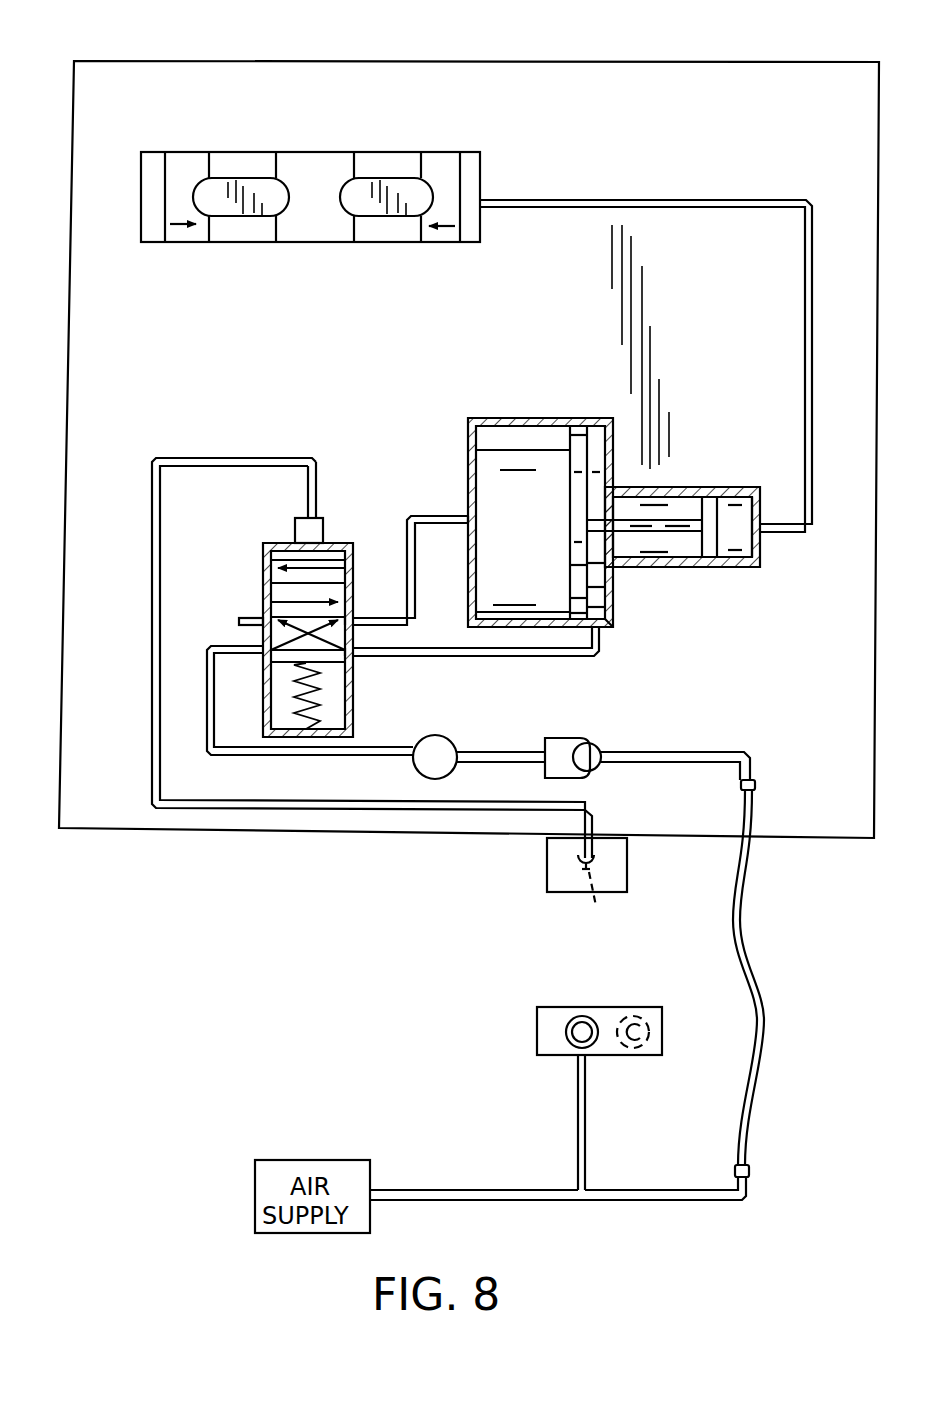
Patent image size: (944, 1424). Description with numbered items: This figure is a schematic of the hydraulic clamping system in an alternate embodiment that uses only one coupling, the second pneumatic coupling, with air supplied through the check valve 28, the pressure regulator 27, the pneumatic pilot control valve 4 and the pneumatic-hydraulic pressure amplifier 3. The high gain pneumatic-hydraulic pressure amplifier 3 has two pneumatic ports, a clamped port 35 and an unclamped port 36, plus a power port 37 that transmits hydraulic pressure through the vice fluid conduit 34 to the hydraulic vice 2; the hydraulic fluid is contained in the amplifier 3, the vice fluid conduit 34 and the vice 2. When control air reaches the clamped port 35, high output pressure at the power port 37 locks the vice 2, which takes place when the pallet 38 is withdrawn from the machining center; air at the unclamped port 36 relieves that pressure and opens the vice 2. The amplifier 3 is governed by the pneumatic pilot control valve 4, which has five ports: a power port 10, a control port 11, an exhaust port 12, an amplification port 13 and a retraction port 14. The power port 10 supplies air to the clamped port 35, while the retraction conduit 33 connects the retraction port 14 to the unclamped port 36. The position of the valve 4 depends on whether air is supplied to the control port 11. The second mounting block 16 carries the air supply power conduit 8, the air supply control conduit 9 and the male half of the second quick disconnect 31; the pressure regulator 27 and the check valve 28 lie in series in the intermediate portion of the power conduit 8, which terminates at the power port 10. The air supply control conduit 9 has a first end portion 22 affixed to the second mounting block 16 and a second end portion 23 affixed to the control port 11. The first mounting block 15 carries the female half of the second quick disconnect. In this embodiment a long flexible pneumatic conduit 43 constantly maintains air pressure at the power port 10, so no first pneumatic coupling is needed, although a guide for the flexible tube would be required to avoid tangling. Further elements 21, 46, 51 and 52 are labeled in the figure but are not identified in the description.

The hydraulic vice 2 is at (437, 163).
The pneumatic-hydraulic pressure amplifier 3 is at (522, 414).
The pneumatic pilot control valve 4 is at (351, 543).
The air supply power conduit 8 is at (692, 752).
The air supply control conduit 9 is at (386, 815).
The power port 10 is at (270, 652).
The control port 11 is at (305, 535).
The exhaust port 12 is at (257, 617).
The amplification port 13 is at (347, 622).
The retraction port 14 is at (350, 655).
The first mounting block 15 is at (533, 1033).
The second mounting block 16 is at (550, 892).
The fan 21 is at (652, 1027).
The first end portion 22 is at (580, 851).
The second end portion 23 is at (319, 500).
The pressure regulator 27 is at (414, 764).
The check valve 28 is at (572, 738).
The male half of second quick disconnect 31 is at (592, 903).
The retraction conduit 33 is at (505, 656).
The vice fluid conduit 34 is at (806, 341).
The clamped port 35 is at (465, 532).
The unclamped port 36 is at (604, 626).
The power port 37 is at (758, 535).
The pallet 38 is at (672, 67).
The flexible pneumatic conduit 43 is at (585, 1112).
The connector 46 is at (572, 1044).
The flexible hose 51 is at (764, 1008).
The conduit 52 is at (437, 512).